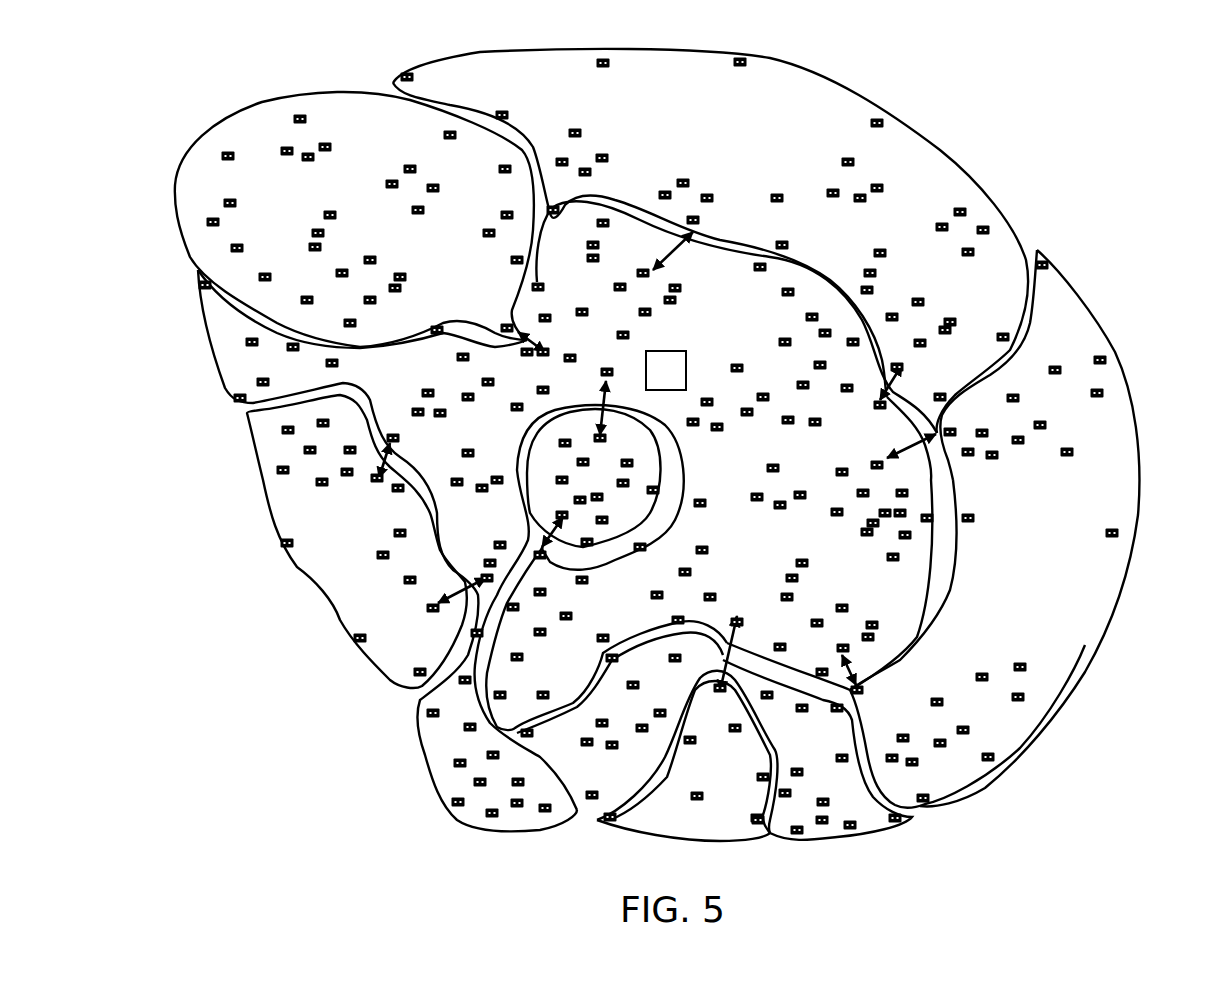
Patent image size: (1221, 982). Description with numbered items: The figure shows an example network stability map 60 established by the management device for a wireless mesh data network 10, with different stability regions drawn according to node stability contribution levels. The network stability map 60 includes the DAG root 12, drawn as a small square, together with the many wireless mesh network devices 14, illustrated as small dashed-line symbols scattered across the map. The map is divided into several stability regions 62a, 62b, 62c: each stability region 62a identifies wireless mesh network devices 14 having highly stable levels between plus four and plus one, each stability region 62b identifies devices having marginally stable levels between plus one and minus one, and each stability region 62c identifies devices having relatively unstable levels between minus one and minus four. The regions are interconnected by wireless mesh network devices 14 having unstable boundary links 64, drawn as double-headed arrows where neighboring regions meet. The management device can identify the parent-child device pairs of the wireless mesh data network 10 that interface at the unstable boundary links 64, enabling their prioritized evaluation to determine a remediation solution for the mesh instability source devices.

The wireless mesh data network 10 is at (293, 593).
The DAG root 12 is at (688, 355).
The wireless mesh network devices 14 is at (858, 165).
The network stability map 60 is at (985, 145).
The stability region 62a is at (228, 346).
The stability region 62b is at (672, 70).
The stability region 62c is at (192, 178).
The unstable boundary links 64 is at (673, 252).